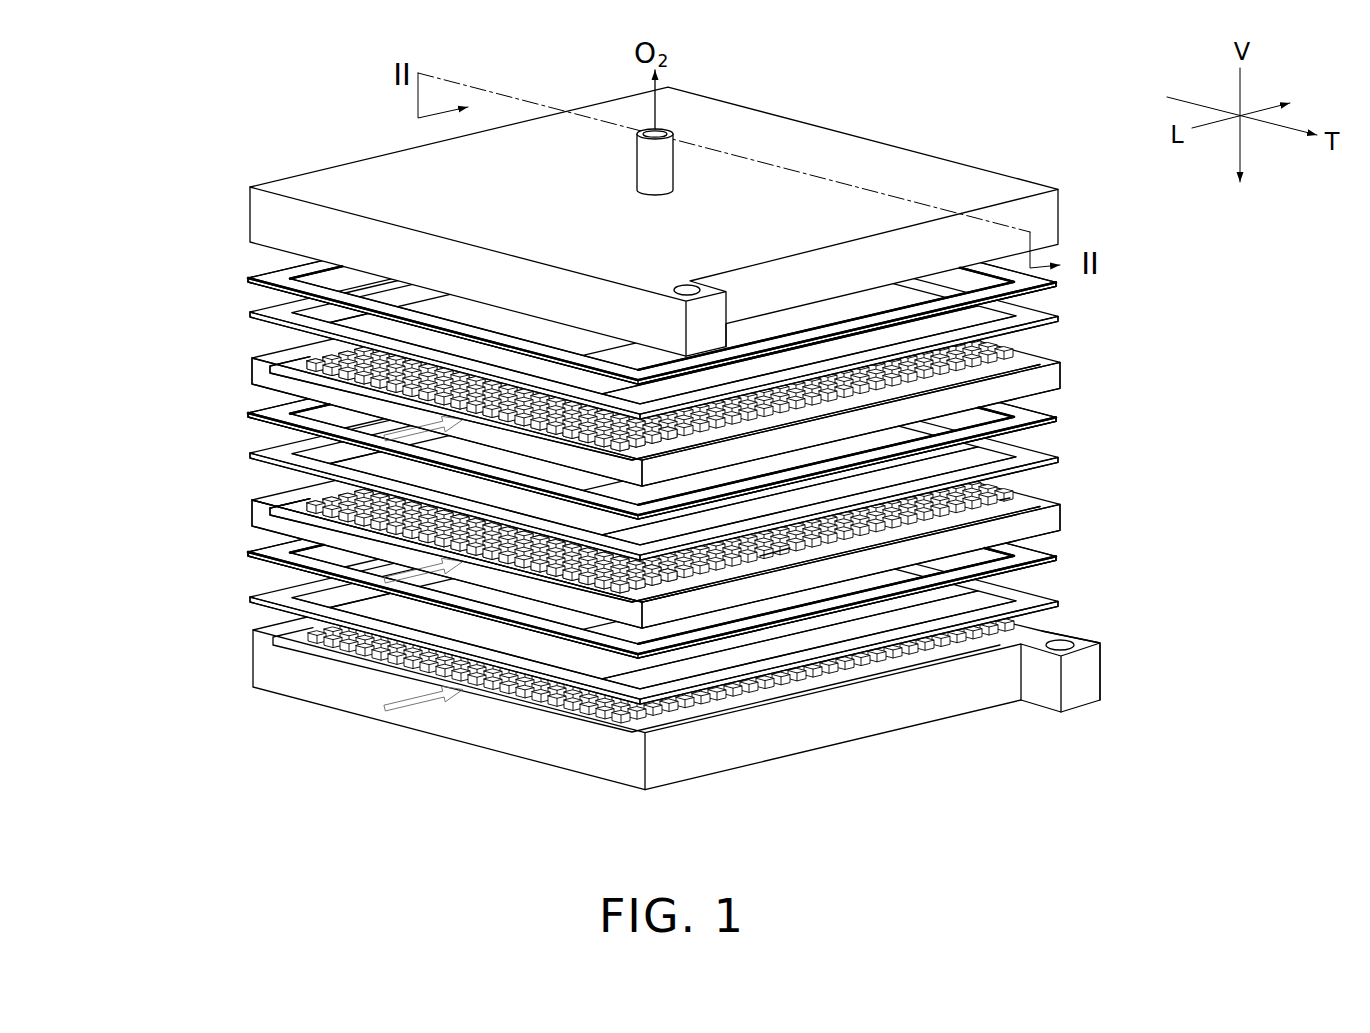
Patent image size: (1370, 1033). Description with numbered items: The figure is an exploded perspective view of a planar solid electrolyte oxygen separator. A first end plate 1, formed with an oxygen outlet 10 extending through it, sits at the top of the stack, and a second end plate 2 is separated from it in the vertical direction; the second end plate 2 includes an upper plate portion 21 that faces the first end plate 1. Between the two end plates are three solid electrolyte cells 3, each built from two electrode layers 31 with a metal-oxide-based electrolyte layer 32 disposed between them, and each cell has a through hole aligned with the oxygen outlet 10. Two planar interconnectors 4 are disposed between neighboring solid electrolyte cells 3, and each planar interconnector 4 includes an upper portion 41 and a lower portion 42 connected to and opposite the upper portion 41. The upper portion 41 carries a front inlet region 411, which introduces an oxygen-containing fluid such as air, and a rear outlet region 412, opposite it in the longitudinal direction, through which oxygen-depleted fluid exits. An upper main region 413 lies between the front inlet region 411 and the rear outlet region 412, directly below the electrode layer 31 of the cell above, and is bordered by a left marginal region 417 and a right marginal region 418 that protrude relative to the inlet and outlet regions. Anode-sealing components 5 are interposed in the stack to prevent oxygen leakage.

The first end plate 1 is at (240, 217).
The oxygen outlet 10 is at (663, 130).
The second end plate 2 is at (243, 675).
The upper plate portion 21 is at (300, 627).
The solid electrolyte cell 3 is at (604, 487).
The electrode layer 31 is at (328, 318).
The metal-oxide-based electrolyte layer 32 is at (273, 311).
The planar interconnector 4 is at (605, 482).
The upper portion 41 is at (297, 356).
The lower portion 42 is at (268, 393).
The front inlet region 411 is at (570, 588).
The rear outlet region 412 is at (1010, 498).
The upper main region 413 is at (771, 554).
The left marginal region 417 is at (313, 488).
The right marginal region 418 is at (691, 590).
The anode-sealing component 5 is at (1028, 284).